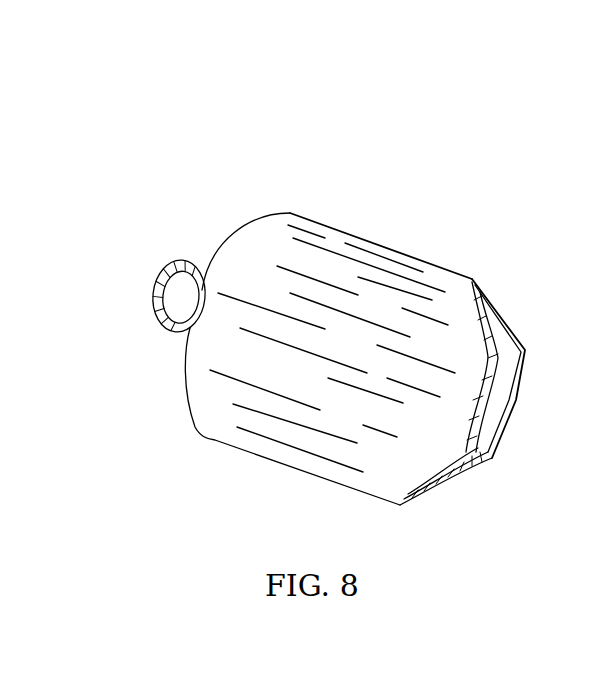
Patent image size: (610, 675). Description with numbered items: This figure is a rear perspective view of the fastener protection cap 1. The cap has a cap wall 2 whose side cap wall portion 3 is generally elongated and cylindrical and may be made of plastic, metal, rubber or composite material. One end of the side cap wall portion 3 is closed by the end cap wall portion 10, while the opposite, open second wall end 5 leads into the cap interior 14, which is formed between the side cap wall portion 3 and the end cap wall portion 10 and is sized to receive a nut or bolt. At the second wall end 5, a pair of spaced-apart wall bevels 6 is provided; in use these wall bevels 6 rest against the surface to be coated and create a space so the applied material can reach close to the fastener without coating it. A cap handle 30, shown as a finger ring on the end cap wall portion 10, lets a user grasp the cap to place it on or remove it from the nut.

The fastener protection cap 1 is at (412, 188).
The cap wall 2 is at (425, 249).
The side cap wall portion 3 is at (342, 228).
The second wall end 5 is at (473, 281).
The wall bevel 6 is at (475, 438).
The end cap wall portion 10 is at (268, 212).
The cap interior 14 is at (504, 378).
The cap handle 30 is at (183, 262).